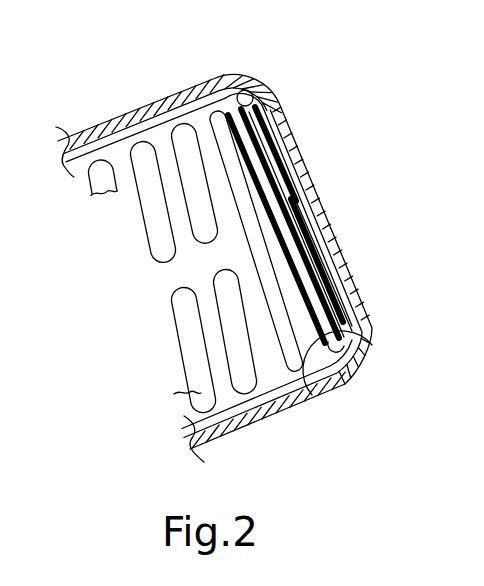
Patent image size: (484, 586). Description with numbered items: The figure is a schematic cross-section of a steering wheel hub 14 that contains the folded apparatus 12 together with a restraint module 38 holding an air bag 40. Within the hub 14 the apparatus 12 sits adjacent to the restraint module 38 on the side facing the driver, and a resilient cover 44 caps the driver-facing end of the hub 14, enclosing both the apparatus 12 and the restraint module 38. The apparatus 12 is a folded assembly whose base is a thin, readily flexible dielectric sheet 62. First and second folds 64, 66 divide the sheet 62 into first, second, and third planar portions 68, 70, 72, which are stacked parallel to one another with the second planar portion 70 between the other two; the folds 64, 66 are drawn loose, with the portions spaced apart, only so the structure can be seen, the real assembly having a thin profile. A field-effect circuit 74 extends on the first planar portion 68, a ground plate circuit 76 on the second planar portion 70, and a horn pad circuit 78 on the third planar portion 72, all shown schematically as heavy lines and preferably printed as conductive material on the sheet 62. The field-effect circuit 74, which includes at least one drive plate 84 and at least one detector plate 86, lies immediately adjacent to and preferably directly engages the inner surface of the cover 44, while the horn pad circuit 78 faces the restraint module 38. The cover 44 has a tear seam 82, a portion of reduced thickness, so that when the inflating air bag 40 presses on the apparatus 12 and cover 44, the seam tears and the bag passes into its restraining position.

The apparatus 12 is at (252, 80).
The hub 14 is at (130, 110).
The restraint module 38 is at (105, 137).
The air bag 40 is at (147, 233).
The resilient cover 44 is at (268, 104).
The dielectric sheet 62 is at (218, 110).
The first fold 64 is at (239, 90).
The second fold 66 is at (338, 386).
The first planar portion 68 is at (345, 336).
The second planar portion 70 is at (362, 358).
The third planar portion 72 is at (336, 370).
The field-effect circuit 74 is at (296, 156).
The ground plate circuit 76 is at (307, 260).
The horn pad circuit 78 is at (312, 298).
The tear seam 82 is at (313, 208).
The drive plate 84 is at (267, 140).
The detector plate 86 is at (330, 313).